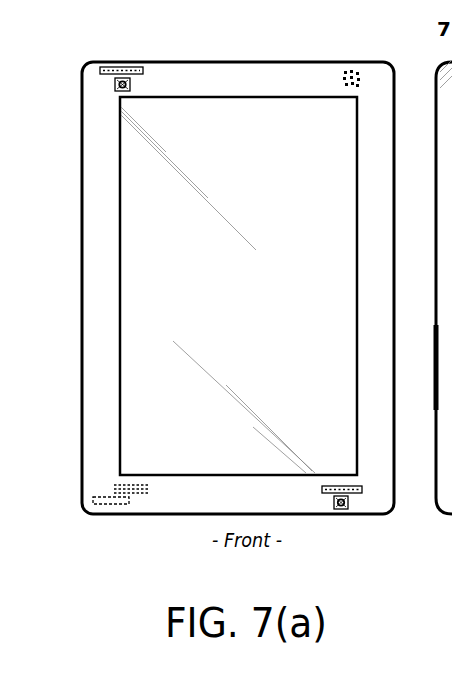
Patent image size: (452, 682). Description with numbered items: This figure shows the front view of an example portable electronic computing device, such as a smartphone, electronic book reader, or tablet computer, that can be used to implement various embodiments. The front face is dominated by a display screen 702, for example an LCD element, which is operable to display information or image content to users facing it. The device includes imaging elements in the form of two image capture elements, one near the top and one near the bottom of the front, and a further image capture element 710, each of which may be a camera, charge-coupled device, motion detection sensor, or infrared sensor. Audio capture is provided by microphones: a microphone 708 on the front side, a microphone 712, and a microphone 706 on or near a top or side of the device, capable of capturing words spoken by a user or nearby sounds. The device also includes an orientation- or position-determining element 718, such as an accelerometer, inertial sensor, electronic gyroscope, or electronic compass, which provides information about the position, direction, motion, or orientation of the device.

The display screen 702 is at (119, 207).
The microphone 706 is at (129, 69).
The microphone 708 is at (356, 493).
The image capture element 710 is at (350, 73).
The microphone 712 is at (133, 492).
The orientation- or position-determining element 718 is at (109, 505).